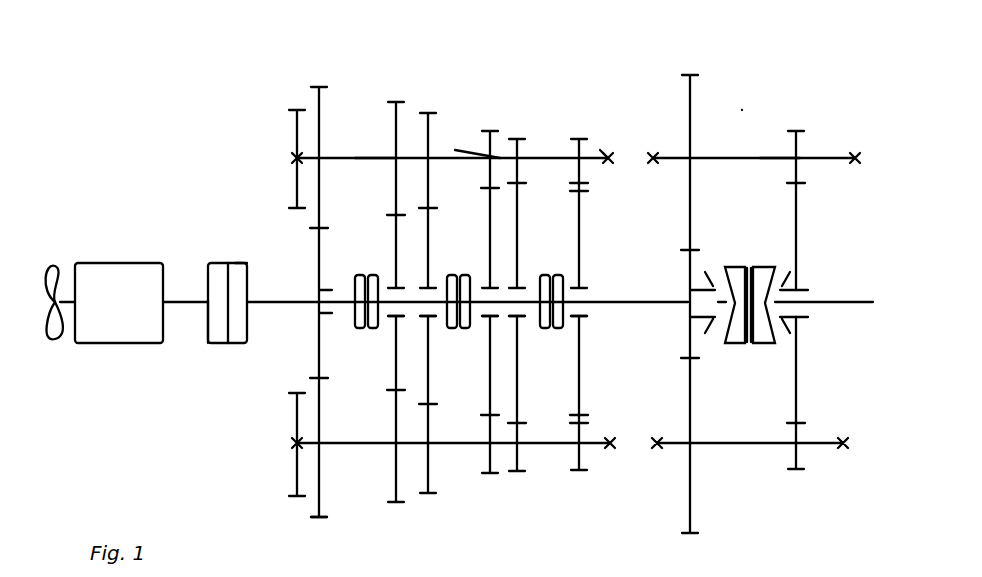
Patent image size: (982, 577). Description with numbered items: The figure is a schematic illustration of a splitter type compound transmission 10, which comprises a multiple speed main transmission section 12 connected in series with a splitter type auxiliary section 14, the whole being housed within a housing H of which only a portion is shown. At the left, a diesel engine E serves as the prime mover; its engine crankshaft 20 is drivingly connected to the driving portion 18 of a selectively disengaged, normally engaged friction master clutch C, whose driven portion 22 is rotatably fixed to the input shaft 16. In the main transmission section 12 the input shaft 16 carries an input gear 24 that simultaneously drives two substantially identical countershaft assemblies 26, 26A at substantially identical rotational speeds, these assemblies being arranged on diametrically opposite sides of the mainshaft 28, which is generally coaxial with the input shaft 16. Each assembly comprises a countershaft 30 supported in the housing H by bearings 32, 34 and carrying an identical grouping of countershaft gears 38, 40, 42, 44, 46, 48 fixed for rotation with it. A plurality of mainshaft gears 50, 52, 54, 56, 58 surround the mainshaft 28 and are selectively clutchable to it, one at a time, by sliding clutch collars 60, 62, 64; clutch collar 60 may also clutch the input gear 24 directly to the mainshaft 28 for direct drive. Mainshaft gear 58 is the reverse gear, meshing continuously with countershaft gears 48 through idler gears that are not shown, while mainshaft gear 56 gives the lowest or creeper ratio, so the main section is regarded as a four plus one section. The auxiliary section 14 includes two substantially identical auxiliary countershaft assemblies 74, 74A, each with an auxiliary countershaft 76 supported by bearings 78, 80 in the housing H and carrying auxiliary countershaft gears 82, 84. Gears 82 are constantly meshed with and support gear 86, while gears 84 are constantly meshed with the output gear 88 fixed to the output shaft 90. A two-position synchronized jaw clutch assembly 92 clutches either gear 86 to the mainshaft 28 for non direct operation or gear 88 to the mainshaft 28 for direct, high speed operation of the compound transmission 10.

The compound transmission 10 is at (633, 138).
The main transmission section 12 is at (458, 136).
The auxiliary section 14 is at (745, 100).
The input shaft 16 is at (274, 298).
The driving portion 18 is at (213, 345).
The engine crankshaft 20 is at (187, 298).
The driven portion 22 is at (235, 345).
The input gear 24 is at (320, 285).
The countershaft assembly 26 is at (350, 150).
The countershaft assembly 26A is at (365, 447).
The mainshaft 28 is at (654, 306).
The countershaft 30 is at (373, 160).
The bearing 32 is at (294, 444).
The bearing 34 is at (616, 452).
The countershaft gear 38 is at (312, 506).
The countershaft gear 40 is at (396, 492).
The countershaft gear 42 is at (430, 470).
The countershaft gear 44 is at (490, 463).
The countershaft gear 46 is at (520, 465).
The countershaft gear 48 is at (579, 466).
The mainshaft gear 50 is at (395, 352).
The mainshaft gear 52 is at (430, 386).
The mainshaft gear 54 is at (489, 378).
The mainshaft gear 56 is at (518, 386).
The mainshaft gear 58 is at (579, 374).
The clutch collar 60 is at (357, 318).
The clutch collar 62 is at (470, 275).
The clutch collar 64 is at (540, 275).
The auxiliary countershaft assembly 74 is at (723, 150).
The auxiliary countershaft assembly 74A is at (744, 452).
The auxiliary countershaft 76 is at (773, 162).
The bearing 78 is at (652, 166).
The bearing 80 is at (862, 156).
The auxiliary section countershaft gear 82 is at (692, 142).
The auxiliary section countershaft gear 84 is at (798, 142).
The gear 86 is at (688, 272).
The output gear 88 is at (793, 262).
The output shaft 90 is at (823, 292).
The synchronized jaw clutch assembly 92 is at (759, 352).
The housing H is at (296, 132).
The master clutch C is at (228, 262).
The engine E is at (104, 303).